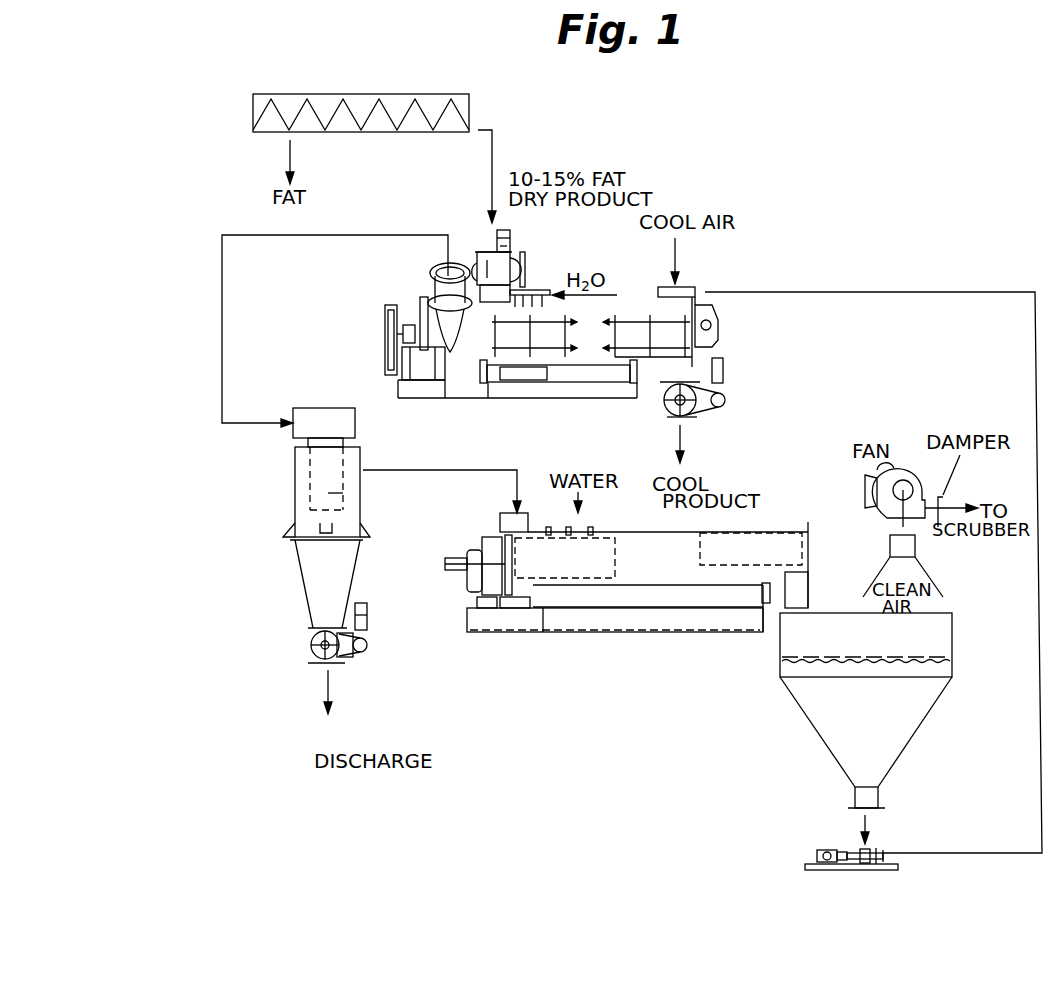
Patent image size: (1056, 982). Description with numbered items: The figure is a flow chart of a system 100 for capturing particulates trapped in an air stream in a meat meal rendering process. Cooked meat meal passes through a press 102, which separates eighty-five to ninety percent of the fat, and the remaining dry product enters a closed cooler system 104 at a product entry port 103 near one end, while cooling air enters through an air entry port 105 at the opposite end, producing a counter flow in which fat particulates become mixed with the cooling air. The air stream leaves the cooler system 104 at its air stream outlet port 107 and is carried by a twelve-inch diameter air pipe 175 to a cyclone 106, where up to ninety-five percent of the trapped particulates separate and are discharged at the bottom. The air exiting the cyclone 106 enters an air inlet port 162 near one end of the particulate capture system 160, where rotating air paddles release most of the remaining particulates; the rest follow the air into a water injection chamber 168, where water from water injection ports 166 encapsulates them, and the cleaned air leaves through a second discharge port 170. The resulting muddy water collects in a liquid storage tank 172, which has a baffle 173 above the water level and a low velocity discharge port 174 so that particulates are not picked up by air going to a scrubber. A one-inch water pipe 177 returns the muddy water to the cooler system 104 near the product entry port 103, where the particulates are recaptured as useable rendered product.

The system 100 is at (893, 253).
The press 102 is at (469, 110).
The product entry port 103 is at (478, 253).
The cooler system 104 is at (627, 313).
The air entry port 105 is at (688, 288).
The cyclone 106 is at (295, 478).
The air stream outlet port 107 is at (433, 288).
The particulate capture system 160 is at (633, 613).
The air inlet port 162 is at (500, 522).
The water injection ports 166 is at (590, 527).
The water injection chamber 168 is at (618, 560).
The second discharge port 170 is at (797, 598).
The liquid storage tank 172 is at (818, 728).
The baffle 173 is at (920, 653).
The low velocity discharge port 174 is at (917, 545).
The air pipe 175 is at (222, 327).
The water pipe 177 is at (1037, 370).